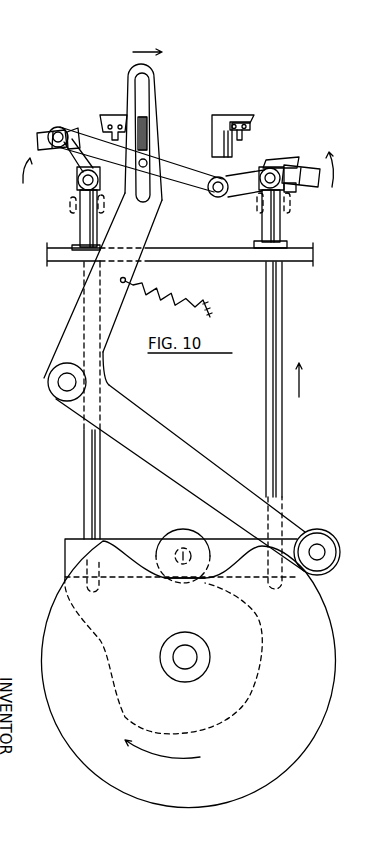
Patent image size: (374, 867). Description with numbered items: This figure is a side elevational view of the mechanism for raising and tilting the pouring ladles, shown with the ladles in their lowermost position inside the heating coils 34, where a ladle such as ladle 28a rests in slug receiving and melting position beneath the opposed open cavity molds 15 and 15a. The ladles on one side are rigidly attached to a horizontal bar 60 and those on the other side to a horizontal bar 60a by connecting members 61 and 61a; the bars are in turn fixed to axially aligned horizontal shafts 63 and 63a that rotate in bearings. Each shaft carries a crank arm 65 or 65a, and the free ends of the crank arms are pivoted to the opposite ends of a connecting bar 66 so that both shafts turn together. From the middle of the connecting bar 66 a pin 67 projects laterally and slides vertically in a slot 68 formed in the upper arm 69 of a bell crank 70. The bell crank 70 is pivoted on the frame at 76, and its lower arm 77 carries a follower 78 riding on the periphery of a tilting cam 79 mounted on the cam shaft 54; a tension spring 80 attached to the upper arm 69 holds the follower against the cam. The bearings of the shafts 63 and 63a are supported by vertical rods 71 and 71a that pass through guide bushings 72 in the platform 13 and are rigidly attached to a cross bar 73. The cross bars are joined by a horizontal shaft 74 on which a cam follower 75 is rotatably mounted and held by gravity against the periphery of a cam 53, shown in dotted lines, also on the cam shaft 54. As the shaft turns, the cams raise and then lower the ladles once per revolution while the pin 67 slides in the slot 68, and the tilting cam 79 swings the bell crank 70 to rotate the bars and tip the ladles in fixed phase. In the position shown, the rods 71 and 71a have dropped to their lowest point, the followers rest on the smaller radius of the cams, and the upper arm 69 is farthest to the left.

The platform 13 is at (220, 256).
The open cavity mold 15 is at (108, 115).
The open cavity mold 15a is at (243, 117).
The pouring ladle 28a is at (268, 163).
The heating coil 34 is at (71, 213).
The cam 53 is at (98, 623).
The cam shaft 54 is at (192, 666).
The horizontal bar 60 is at (40, 183).
The horizontal bar 60a is at (318, 184).
The connecting member 61 is at (63, 186).
The connecting member 61a is at (293, 188).
The horizontal shaft 63 is at (99, 180).
The horizontal shaft 63a is at (282, 168).
The crank arm 65 is at (53, 147).
The crank arm 65a is at (250, 193).
The connecting bar 66 is at (205, 190).
The pin 67 is at (147, 161).
The slot 68 is at (148, 90).
The upper arm 69 is at (144, 237).
The bell crank 70 is at (110, 381).
The vertical rod 71 is at (88, 481).
The vertical rod 71a is at (283, 483).
The guide bushing 72 is at (72, 243).
The cross bar 73 is at (70, 539).
The horizontal shaft 74 is at (171, 582).
The cam follower 75 is at (185, 528).
The pivot 76 is at (62, 380).
The lower arm 77 is at (193, 447).
The follower 78 is at (333, 536).
The tilting cam 79 is at (290, 757).
The tension spring 80 is at (173, 286).